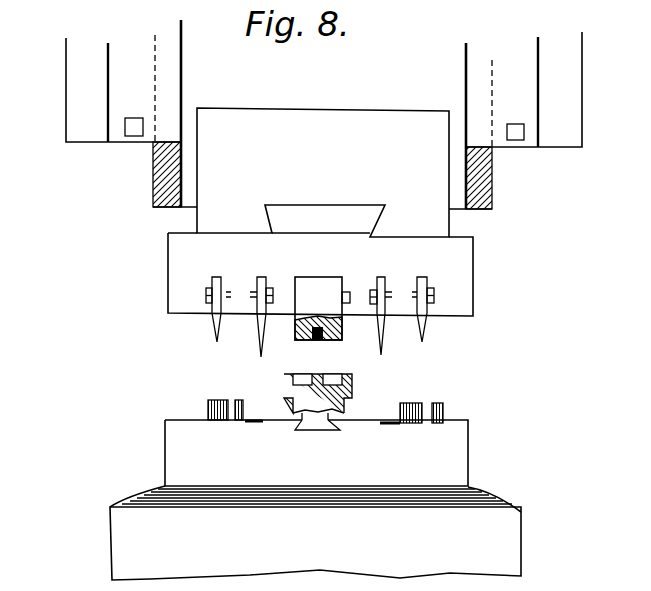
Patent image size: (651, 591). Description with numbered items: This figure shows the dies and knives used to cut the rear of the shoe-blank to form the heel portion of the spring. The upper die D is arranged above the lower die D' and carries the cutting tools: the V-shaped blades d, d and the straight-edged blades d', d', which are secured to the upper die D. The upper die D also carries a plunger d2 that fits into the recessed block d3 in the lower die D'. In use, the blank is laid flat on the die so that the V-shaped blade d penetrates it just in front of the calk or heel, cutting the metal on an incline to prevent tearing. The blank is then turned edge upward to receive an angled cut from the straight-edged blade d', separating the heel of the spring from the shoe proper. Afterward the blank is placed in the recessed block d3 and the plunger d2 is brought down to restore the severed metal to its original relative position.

The upper die D is at (320, 274).
The lower die D' is at (316, 443).
The V-shaped blade d is at (325, 317).
The straight-edged blade d' is at (328, 313).
The plunger d2 is at (322, 308).
The recessed block d3 is at (318, 386).